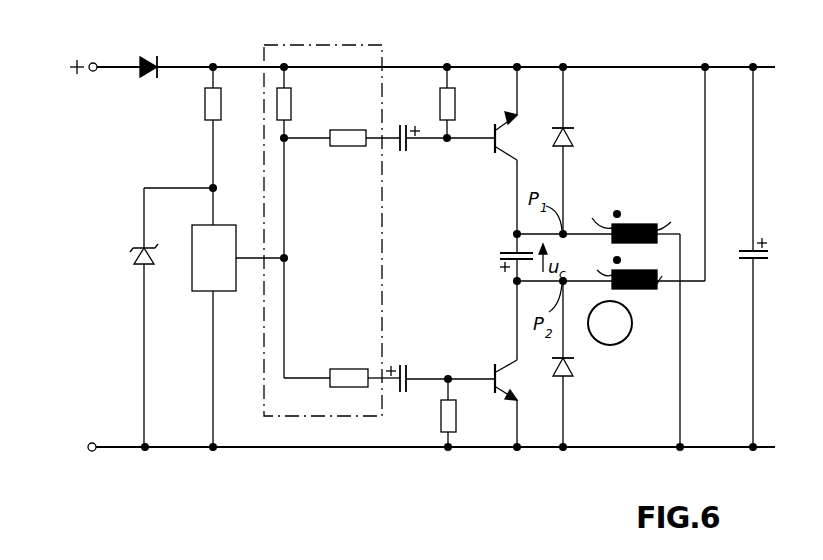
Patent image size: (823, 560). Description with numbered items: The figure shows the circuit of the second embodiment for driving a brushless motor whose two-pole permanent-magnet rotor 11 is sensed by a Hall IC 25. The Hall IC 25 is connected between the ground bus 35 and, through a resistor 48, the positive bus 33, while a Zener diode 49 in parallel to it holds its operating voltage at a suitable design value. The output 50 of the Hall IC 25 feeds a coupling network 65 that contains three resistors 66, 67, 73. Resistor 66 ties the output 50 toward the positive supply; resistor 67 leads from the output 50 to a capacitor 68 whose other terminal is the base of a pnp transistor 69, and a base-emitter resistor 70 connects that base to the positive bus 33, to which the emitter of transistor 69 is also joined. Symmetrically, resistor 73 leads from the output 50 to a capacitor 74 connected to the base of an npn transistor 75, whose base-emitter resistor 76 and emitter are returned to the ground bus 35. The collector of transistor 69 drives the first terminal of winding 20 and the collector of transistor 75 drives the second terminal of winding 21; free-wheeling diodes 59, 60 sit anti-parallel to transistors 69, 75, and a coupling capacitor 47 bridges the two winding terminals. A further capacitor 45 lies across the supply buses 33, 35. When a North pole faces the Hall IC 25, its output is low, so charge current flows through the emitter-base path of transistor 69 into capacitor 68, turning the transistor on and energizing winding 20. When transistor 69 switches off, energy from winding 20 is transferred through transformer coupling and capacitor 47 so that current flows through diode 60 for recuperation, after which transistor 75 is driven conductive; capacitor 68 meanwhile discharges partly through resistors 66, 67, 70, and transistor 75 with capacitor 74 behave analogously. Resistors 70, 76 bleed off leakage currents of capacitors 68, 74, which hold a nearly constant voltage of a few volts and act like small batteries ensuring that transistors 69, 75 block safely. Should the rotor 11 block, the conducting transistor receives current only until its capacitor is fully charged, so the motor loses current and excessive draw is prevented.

The rotor 11 is at (616, 344).
The winding filament 20 is at (640, 224).
The winding 21 is at (640, 290).
The Hall IC 25 is at (222, 290).
The positive bus 33 is at (540, 67).
The ground bus 35 is at (348, 447).
The capacitor 45 is at (739, 258).
The coupling capacitor 47 is at (500, 253).
The resistor 48 is at (205, 105).
The Zener diode 49 is at (134, 252).
The output of the Hall IC 50 is at (252, 258).
The free-wheeling diode 59 is at (575, 137).
The free-wheeling diode 60 is at (552, 367).
The coupling network 65 is at (300, 47).
The resistor 66 is at (291, 103).
The resistor 67 is at (345, 146).
The capacitor 68 is at (402, 152).
The pnp transistor 69 is at (502, 157).
The base-emitter resistor 70 is at (455, 103).
The resistor 73 is at (348, 369).
The capacitor 74 is at (408, 362).
The npn transistor 75 is at (507, 356).
The base-emitter resistor 76 is at (456, 418).